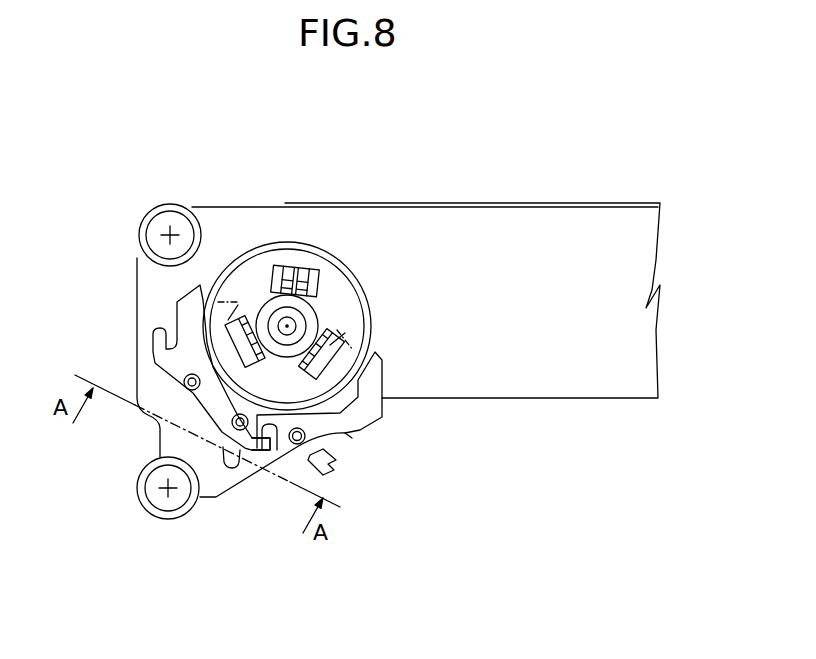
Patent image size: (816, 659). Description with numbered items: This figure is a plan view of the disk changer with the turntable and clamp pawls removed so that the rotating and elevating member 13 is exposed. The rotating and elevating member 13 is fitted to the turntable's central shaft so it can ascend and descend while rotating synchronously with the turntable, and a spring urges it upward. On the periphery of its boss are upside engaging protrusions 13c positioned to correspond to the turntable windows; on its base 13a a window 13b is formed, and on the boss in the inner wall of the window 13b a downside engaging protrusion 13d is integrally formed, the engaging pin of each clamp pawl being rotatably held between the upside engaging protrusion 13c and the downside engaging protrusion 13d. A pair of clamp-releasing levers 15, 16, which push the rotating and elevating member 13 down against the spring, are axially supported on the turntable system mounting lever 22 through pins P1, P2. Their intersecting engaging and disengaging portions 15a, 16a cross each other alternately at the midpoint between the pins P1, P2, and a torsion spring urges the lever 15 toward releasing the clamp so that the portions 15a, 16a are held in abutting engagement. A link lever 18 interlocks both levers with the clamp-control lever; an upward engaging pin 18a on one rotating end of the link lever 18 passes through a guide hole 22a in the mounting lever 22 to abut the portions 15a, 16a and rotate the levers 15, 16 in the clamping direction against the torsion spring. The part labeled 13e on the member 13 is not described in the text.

The rotating and elevating member 13 is at (230, 253).
The base 13a is at (340, 297).
The window 13b is at (307, 280).
The upside engaging protrusion 13c is at (277, 280).
The downside engaging protrusion 13d is at (292, 278).
The rim of ratchet wheel 13e is at (368, 308).
The clamp-releasing lever 15 is at (175, 313).
The intersecting engaging and disengaging portion 15a is at (260, 446).
The clamp-releasing lever 16 is at (372, 430).
The intersecting engaging and disengaging portion 16a is at (256, 444).
The link lever 18 is at (333, 470).
The engaging pin 18a is at (233, 425).
The turntable system mounting lever 22 is at (548, 398).
The guide hole 22a is at (232, 462).
The pin P1 is at (180, 376).
The pin P2 is at (352, 438).